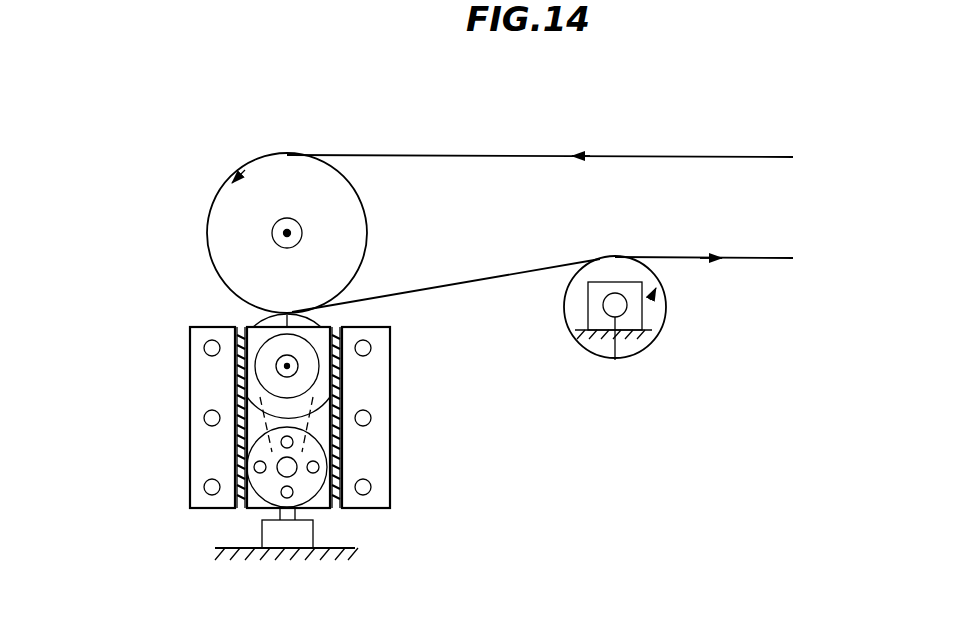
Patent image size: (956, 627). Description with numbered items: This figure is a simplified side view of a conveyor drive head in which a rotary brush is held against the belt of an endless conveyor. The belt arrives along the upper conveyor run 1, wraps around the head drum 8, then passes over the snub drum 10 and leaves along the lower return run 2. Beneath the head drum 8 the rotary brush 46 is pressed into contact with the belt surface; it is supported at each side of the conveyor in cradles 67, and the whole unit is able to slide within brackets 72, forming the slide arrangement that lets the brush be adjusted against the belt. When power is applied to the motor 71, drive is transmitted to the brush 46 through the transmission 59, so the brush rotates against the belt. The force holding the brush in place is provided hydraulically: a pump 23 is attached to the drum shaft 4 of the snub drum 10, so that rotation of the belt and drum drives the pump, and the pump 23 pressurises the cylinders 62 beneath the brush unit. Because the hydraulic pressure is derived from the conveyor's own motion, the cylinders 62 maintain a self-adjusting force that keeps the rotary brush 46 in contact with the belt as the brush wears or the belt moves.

The upper conveyor run 1 is at (624, 150).
The lower return run 2 is at (758, 266).
The head drum 8 is at (216, 206).
The rotary brush 46 is at (253, 322).
The cradles 67 is at (240, 326).
The brackets 72 is at (186, 445).
The transmission 59 is at (312, 421).
The motor 71 is at (335, 512).
The cylinders 62 is at (258, 533).
The snub drum 10 is at (662, 328).
The pump 23 is at (591, 309).
The drum shaft 4 is at (615, 360).